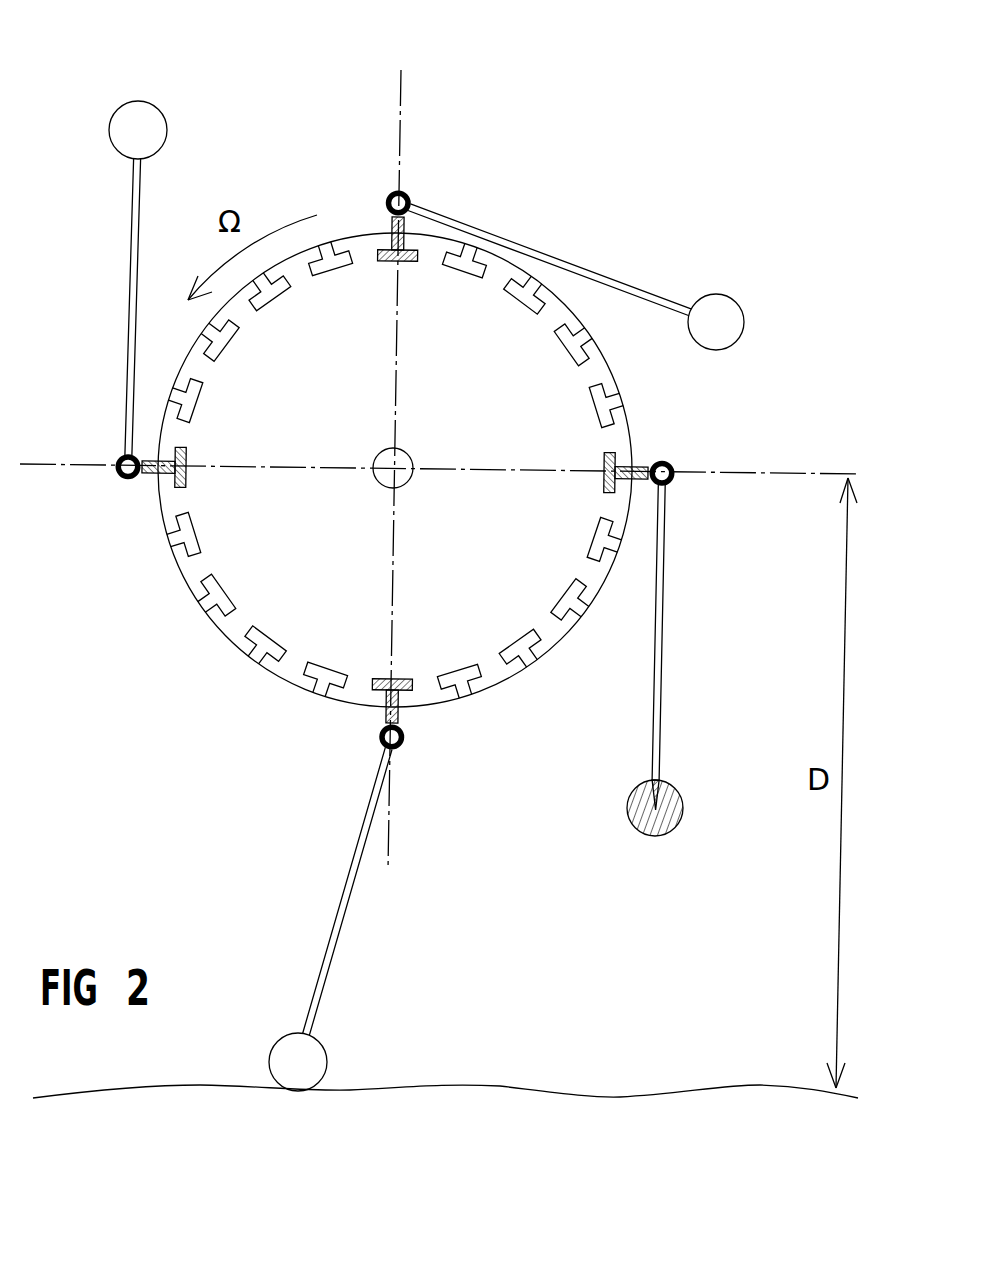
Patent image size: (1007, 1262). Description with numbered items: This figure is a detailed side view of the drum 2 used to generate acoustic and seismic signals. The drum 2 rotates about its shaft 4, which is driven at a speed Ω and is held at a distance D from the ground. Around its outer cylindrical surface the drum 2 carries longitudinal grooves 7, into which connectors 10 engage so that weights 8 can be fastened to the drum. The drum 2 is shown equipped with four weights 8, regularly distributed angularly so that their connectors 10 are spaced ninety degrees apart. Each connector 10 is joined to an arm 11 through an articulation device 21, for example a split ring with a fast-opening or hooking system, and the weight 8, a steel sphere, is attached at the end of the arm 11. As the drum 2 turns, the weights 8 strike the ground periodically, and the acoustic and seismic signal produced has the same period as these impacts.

The drum 2 is at (513, 420).
The shaft 4 is at (375, 480).
The longitudinal grooves 7 is at (500, 307).
The weights 8 is at (286, 1052).
The connector 10 is at (362, 225).
The arm 11 is at (665, 618).
The articulation device 21 is at (672, 482).